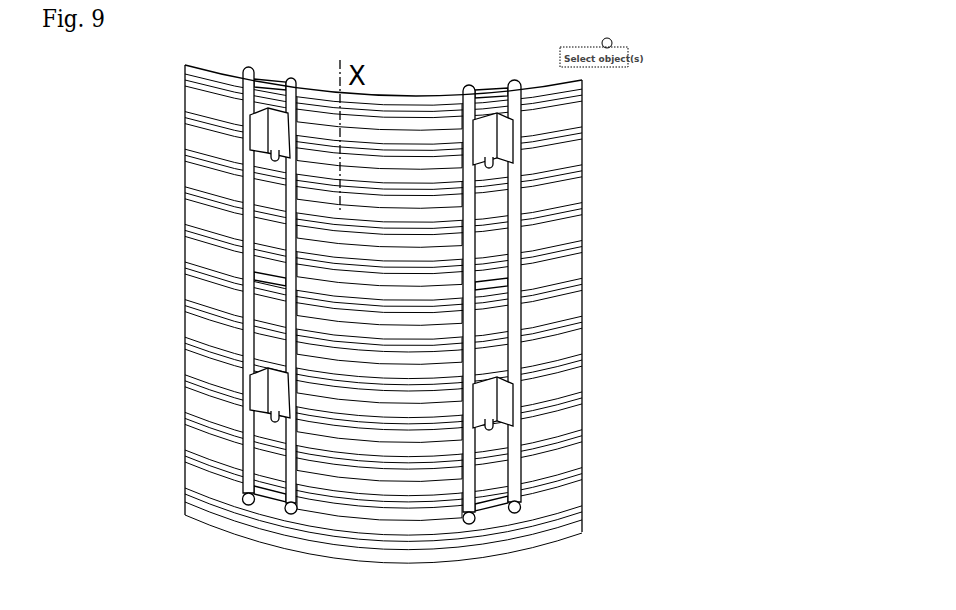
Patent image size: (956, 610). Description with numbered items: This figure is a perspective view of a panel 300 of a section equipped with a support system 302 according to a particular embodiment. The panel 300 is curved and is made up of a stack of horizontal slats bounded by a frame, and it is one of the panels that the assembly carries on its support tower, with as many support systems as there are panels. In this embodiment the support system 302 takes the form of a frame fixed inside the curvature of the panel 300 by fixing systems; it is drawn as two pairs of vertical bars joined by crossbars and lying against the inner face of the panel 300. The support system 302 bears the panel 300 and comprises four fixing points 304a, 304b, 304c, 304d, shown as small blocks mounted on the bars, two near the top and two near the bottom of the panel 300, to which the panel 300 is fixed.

The panel 300 is at (567, 229).
The support system 302 is at (402, 102).
The fixing point 304a is at (492, 163).
The fixing point 304b is at (272, 152).
The fixing point 304c is at (492, 428).
The fixing point 304d is at (273, 420).